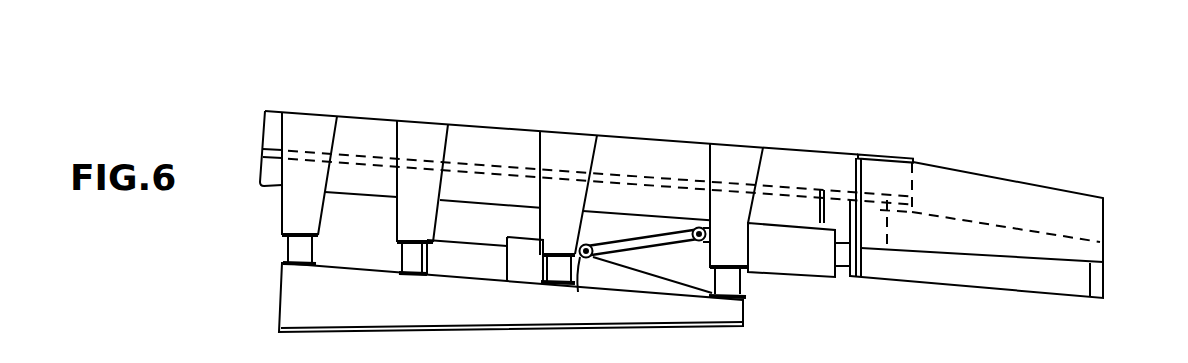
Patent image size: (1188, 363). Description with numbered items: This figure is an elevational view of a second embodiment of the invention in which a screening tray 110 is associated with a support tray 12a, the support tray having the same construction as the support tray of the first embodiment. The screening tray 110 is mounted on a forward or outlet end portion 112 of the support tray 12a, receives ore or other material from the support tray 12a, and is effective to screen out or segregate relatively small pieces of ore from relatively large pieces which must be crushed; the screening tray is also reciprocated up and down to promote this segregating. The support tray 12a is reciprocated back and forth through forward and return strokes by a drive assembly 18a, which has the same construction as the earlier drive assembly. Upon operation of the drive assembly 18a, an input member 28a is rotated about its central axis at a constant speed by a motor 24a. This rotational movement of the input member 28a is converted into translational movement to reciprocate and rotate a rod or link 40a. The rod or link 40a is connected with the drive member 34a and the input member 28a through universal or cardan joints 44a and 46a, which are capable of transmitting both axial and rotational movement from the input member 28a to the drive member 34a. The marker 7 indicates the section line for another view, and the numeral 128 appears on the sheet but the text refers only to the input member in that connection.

The section line 7- 7 is at (218, 82).
The support tray 12a is at (496, 125).
The drive assembly 18a is at (603, 265).
The motor 24a is at (457, 257).
The input member 28a is at (578, 292).
The drive member 34a is at (748, 253).
The rod or link 40a is at (620, 246).
The universal or cardan joint 44a is at (584, 242).
The universal or cardan joint 46a is at (700, 225).
The screening tray 110 is at (998, 179).
The forward or outlet end portion 112 is at (898, 157).
The member 128 is at (849, 362).